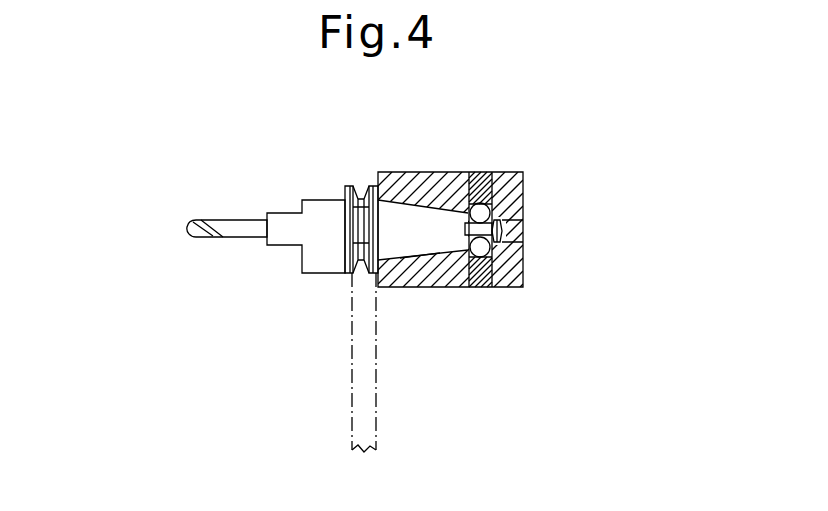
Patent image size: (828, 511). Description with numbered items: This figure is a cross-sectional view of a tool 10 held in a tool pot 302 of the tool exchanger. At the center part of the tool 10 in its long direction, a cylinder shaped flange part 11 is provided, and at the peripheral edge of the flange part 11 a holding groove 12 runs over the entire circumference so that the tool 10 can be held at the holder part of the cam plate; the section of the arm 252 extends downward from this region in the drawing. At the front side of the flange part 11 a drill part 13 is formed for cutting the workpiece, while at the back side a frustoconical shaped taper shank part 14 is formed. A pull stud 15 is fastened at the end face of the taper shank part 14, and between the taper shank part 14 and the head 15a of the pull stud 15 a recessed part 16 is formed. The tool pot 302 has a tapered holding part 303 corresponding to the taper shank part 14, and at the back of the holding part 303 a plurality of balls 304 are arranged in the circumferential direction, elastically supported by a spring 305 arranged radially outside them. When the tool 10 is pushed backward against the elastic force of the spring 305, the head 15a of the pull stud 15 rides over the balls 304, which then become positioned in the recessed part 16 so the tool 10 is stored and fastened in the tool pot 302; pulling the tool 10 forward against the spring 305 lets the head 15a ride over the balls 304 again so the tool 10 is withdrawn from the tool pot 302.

The tool 10 is at (274, 190).
The flange part 11 is at (350, 187).
The holding groove 12 is at (367, 273).
The drill part 13 is at (198, 218).
The taper shank part 14 is at (418, 240).
The pull stud 15 is at (462, 232).
The head 15a is at (505, 237).
The recessed part 16 is at (470, 255).
The support arm 252 is at (376, 425).
The tool pot 302 is at (431, 170).
The holding part 303 is at (428, 222).
The balls 304 is at (503, 223).
The spring 305 is at (507, 196).